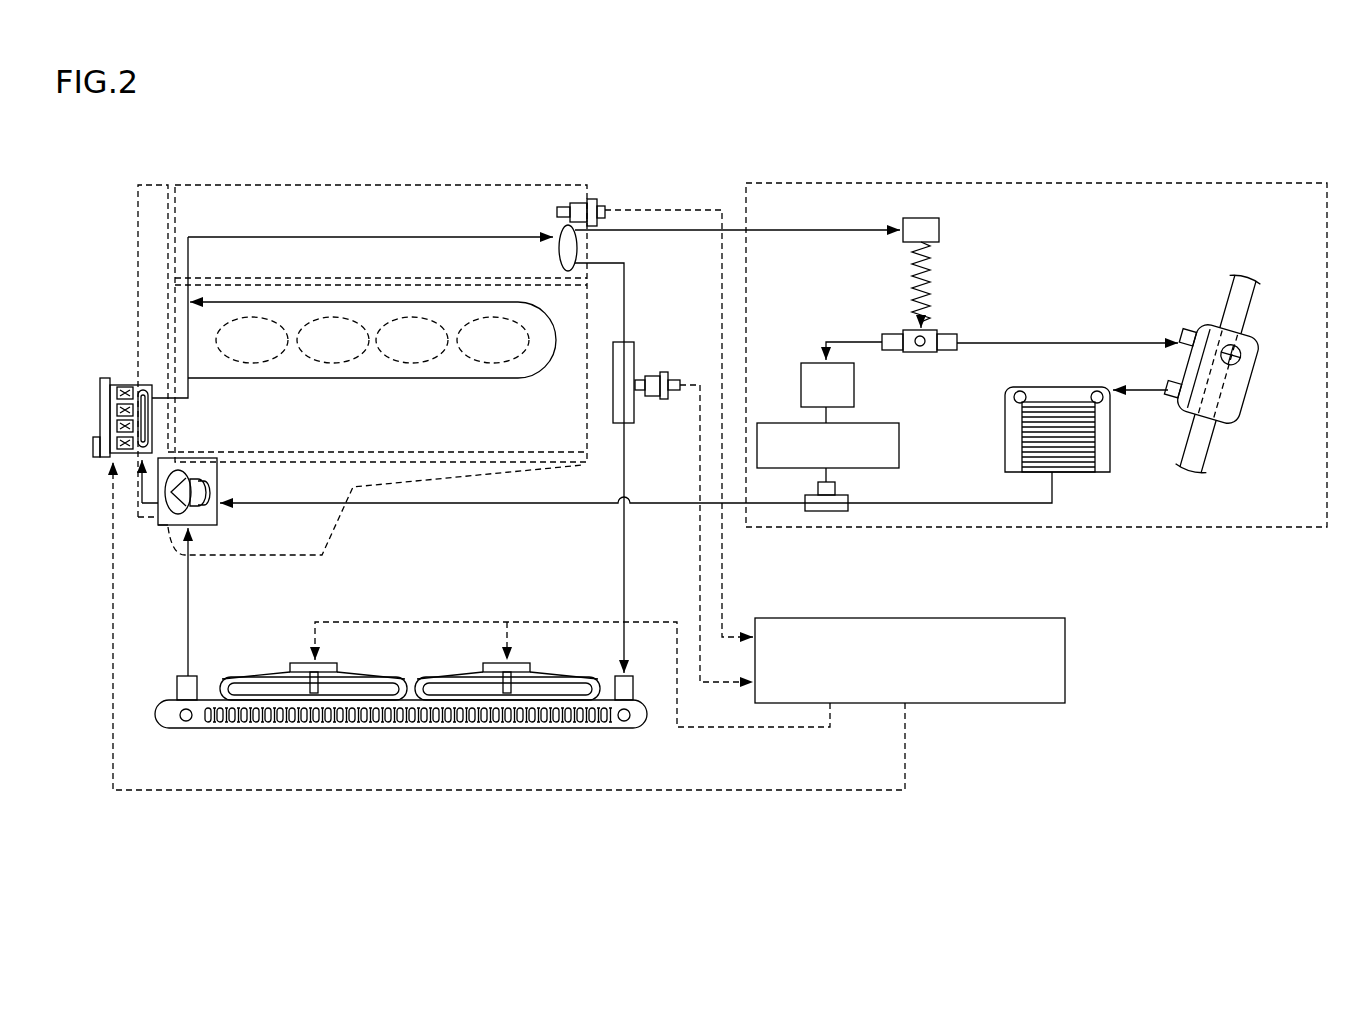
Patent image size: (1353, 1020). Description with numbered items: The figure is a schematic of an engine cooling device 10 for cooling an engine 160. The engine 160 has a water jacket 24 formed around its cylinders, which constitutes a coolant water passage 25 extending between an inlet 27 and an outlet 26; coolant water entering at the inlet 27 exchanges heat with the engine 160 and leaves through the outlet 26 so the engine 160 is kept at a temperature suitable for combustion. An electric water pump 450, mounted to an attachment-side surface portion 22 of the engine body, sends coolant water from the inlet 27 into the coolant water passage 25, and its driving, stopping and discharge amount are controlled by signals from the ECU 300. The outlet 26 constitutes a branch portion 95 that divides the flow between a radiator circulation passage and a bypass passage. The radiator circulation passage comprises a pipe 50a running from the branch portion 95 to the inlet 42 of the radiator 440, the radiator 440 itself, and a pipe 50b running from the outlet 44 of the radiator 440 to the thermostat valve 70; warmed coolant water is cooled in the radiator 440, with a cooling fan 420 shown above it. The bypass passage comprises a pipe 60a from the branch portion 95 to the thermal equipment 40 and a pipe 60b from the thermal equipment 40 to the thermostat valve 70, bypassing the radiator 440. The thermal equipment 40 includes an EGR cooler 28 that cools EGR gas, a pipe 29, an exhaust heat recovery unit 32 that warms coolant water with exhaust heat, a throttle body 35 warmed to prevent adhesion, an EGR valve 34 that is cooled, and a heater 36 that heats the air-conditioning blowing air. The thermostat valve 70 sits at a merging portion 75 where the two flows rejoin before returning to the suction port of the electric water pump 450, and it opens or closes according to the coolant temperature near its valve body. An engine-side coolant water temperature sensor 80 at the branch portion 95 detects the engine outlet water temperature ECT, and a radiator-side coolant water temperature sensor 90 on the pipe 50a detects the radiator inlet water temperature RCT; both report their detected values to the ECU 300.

The engine cooling device 10 is at (1242, 124).
The attachment-side surface portion 22 is at (150, 185).
The water jacket 24 is at (302, 185).
The engine 160 is at (423, 278).
The coolant water passage 25 is at (451, 224).
The outlet 26 is at (583, 248).
The inlet 27 is at (142, 376).
The EGR cooler 28 is at (930, 218).
The pipe 29 is at (1060, 340).
The exhaust heat recovery unit 32 is at (1260, 336).
The EGR valve 34 is at (870, 423).
The throttle body 35 is at (826, 352).
The heater 36 is at (1066, 388).
The thermal equipment 40 is at (1038, 183).
The inlet of radiator 42 is at (630, 688).
The outlet of radiator 44 is at (180, 688).
The pipe 50a is at (630, 318).
The pipe 50b is at (192, 625).
The pipe 60a is at (737, 228).
The pipe 60b is at (527, 506).
The thermostat valve 70 is at (220, 489).
The merging portion 75 is at (156, 532).
The engine-side coolant water temperature sensor 80 is at (598, 201).
The radiator-side coolant water temperature sensor 90 is at (662, 382).
The branch portion 95 is at (556, 198).
The ECU 300 is at (1006, 618).
The cooling fan 420 is at (366, 676).
The radiator 440 is at (515, 733).
The electric water pump 450 is at (99, 463).